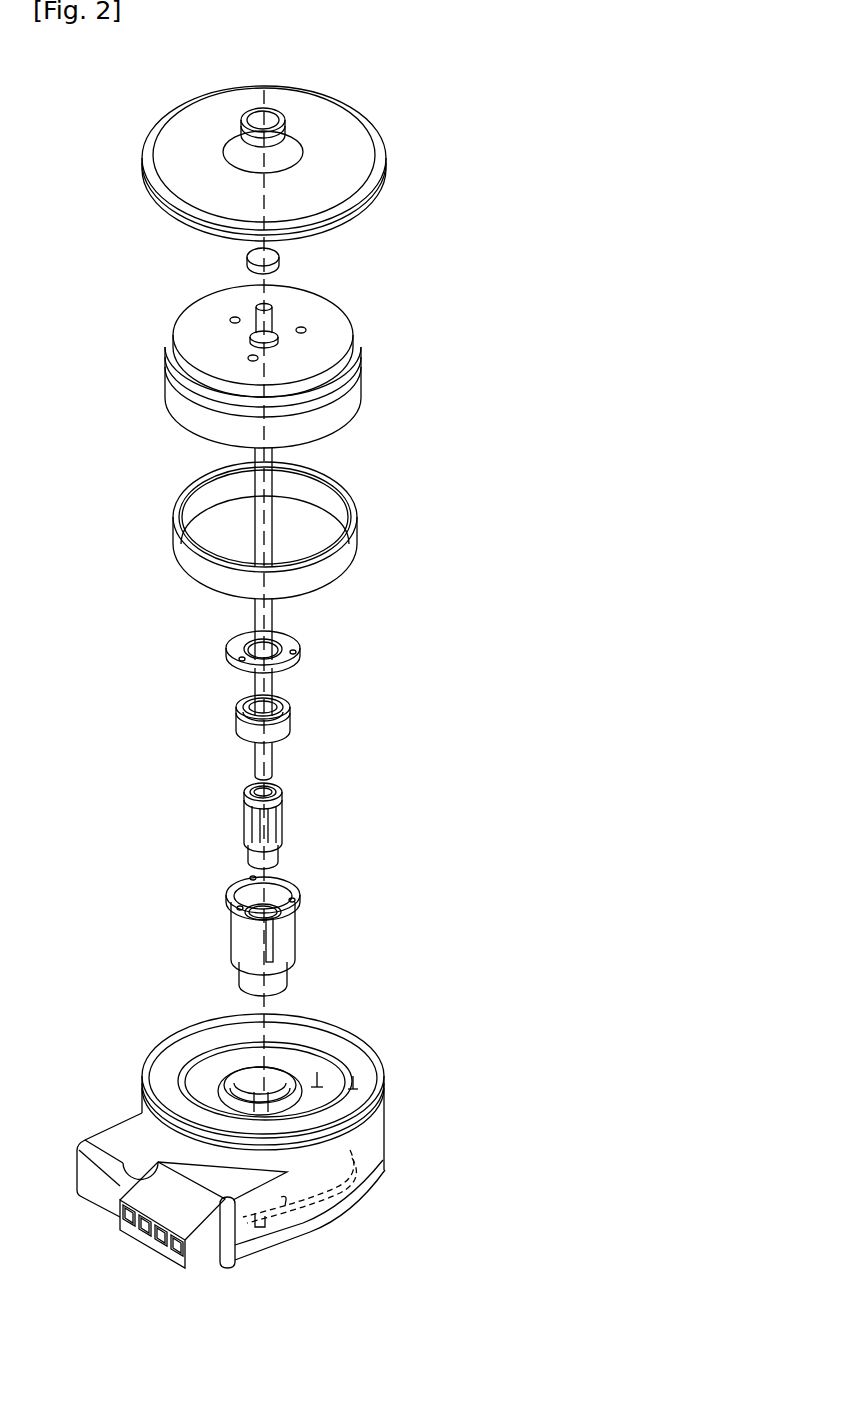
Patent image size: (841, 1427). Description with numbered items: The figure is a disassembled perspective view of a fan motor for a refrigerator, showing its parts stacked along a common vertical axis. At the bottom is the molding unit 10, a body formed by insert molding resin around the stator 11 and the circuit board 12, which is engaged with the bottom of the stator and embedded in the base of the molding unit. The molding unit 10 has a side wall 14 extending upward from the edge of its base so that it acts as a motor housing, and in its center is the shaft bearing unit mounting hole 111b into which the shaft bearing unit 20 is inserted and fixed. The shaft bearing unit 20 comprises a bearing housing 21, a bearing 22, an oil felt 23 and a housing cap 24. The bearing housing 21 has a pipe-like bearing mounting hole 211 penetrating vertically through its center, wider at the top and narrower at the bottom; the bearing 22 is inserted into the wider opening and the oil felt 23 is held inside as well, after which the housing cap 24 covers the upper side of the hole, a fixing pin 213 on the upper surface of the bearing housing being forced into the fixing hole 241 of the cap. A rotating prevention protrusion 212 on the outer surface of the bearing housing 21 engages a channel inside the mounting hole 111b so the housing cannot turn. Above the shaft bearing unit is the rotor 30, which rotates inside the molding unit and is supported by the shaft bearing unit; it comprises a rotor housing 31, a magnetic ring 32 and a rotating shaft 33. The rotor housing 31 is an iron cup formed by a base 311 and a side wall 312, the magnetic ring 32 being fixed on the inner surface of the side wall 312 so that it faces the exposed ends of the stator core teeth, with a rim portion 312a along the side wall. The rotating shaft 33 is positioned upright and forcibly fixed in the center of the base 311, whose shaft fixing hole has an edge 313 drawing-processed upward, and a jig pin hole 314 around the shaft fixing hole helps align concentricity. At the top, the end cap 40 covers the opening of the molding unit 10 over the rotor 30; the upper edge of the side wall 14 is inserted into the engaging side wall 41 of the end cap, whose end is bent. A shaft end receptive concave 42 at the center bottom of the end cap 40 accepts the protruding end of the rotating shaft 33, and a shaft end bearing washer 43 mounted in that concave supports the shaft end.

The molding unit 10 is at (285, 1111).
The stator 11 is at (317, 1072).
The shaft bearing unit mounting hole 111b is at (240, 1082).
The circuit board 12 is at (327, 1210).
The side wall 14 is at (353, 1086).
The shaft bearing unit 20 is at (232, 810).
The bearing housing 21 is at (187, 926).
The bearing mounting hole 211 is at (232, 893).
The rotating prevention protrusion 212 is at (255, 942).
The fixing pin 213 is at (226, 905).
The bearing 22 is at (235, 818).
The oil felt 23 is at (226, 722).
The housing cap 24 is at (213, 659).
The fixing hole 241 is at (232, 661).
The rotor 30 is at (245, 526).
The rotor housing 31 is at (206, 372).
The base 311 is at (236, 371).
The side wall 312 is at (180, 410).
The rotor rim 312a is at (168, 365).
The edge of the shaft fixing hole 313 is at (248, 338).
The jig pin hole 314 is at (230, 318).
The magnetic ring 32 is at (160, 531).
The rotating shaft 33 is at (238, 617).
The end cap 40 is at (317, 148).
The engaging side wall 41 is at (378, 192).
The shaft end receptive concave 42 is at (270, 117).
The shaft end bearing washer 43 is at (243, 263).